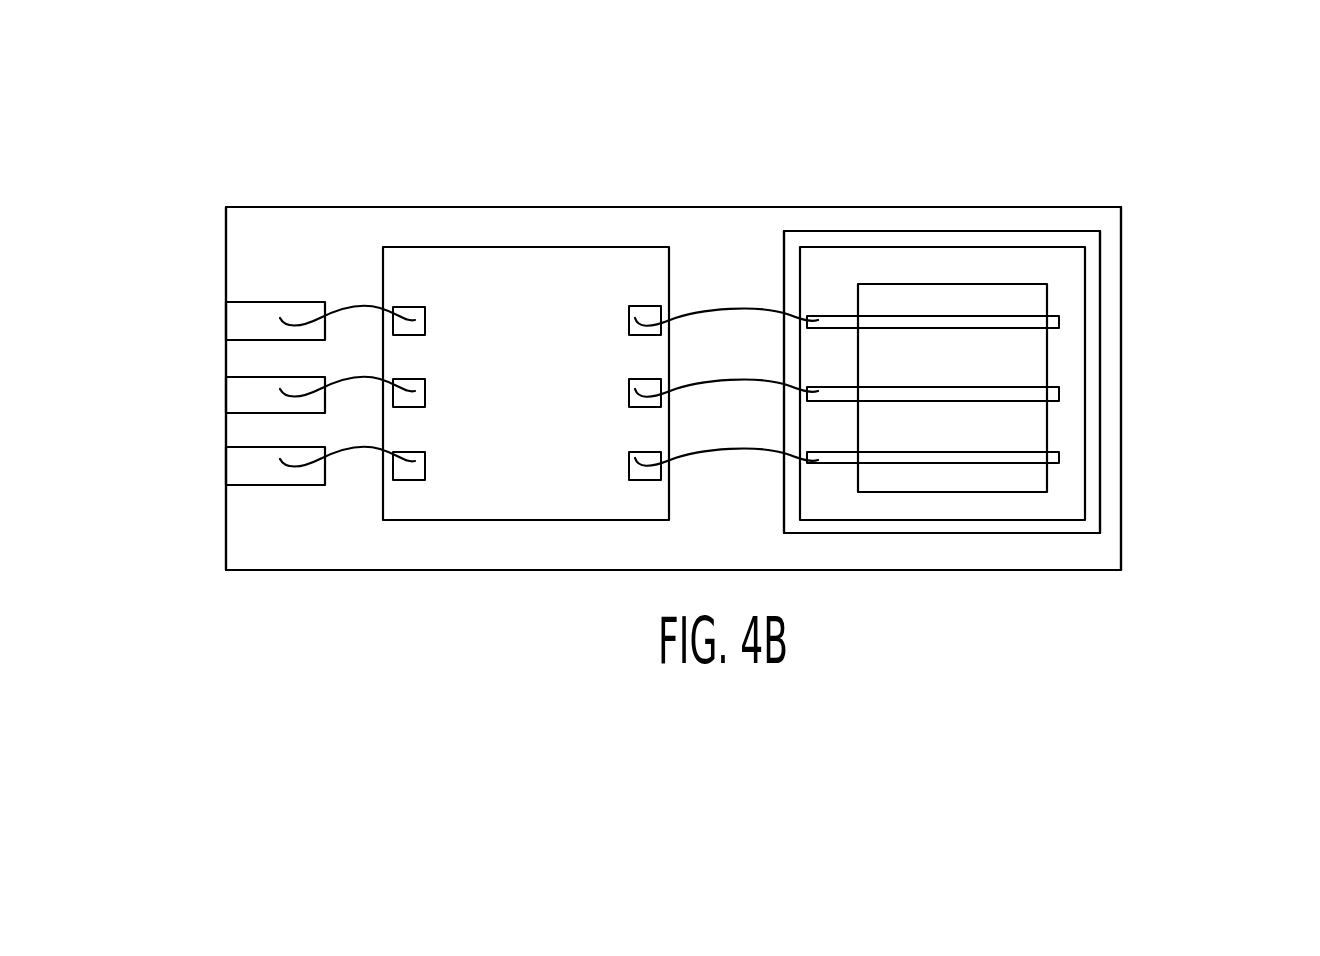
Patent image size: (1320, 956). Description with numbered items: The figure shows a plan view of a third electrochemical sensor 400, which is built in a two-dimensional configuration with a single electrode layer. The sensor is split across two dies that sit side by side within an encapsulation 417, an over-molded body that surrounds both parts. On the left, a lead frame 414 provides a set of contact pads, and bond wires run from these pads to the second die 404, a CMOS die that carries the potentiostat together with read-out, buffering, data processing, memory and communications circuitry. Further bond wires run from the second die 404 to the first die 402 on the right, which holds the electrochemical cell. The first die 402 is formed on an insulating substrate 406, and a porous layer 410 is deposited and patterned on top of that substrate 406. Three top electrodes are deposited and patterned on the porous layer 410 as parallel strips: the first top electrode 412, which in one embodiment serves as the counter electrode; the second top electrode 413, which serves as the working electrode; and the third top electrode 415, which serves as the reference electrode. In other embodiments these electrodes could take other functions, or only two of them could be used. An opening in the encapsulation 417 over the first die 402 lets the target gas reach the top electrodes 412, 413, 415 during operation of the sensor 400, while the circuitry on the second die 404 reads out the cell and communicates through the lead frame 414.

The third electrochemical sensor 400 is at (131, 153).
The encapsulation 417 is at (303, 232).
The second die 404 is at (517, 267).
The first die 402 is at (918, 237).
The insulating substrate 406 is at (1085, 235).
The porous layer 410 is at (1000, 258).
The first top electrode 412 is at (1060, 322).
The second top electrode 413 is at (1060, 396).
The third top electrode 415 is at (1060, 455).
The lead frame 414 is at (240, 467).